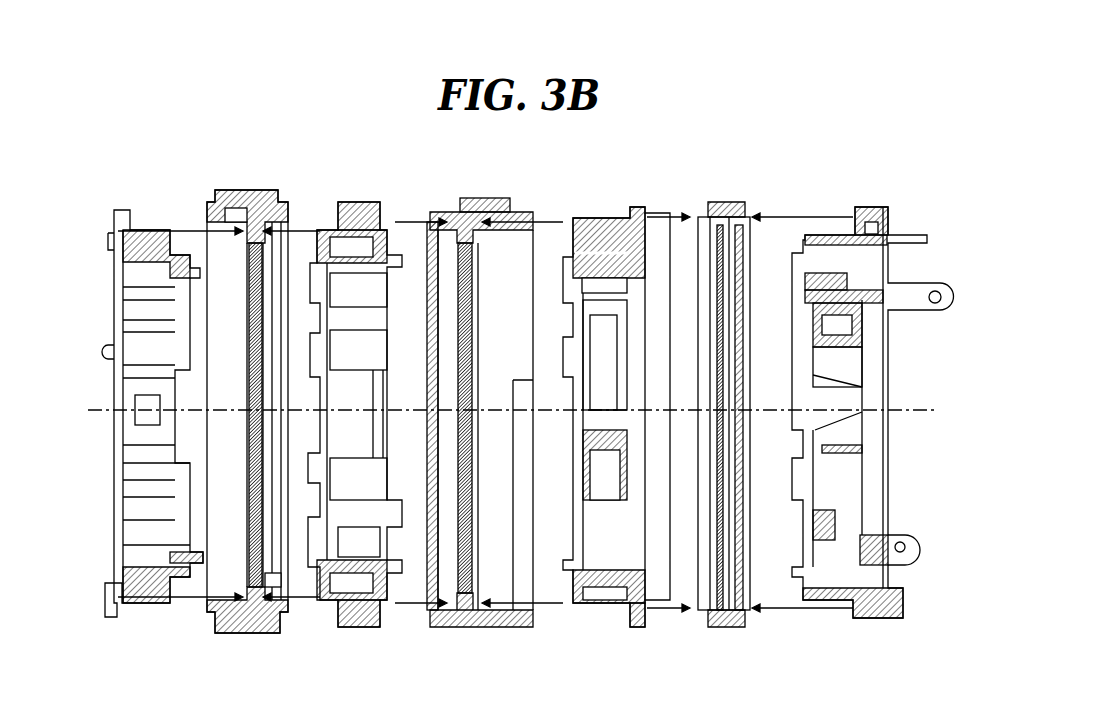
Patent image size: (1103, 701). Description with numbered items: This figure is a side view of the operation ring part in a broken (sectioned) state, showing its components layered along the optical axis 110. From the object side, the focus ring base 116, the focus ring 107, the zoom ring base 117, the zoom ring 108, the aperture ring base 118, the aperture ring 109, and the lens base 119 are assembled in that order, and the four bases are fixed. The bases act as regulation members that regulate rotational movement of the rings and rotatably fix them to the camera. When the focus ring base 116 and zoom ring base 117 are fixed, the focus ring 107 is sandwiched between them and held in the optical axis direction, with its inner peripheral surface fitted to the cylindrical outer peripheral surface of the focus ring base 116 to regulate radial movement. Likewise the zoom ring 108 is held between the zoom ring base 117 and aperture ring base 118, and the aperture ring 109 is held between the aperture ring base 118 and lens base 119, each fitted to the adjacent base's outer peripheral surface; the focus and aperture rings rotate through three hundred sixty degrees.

The optical axis 110 is at (100, 424).
The focus ring base 116 is at (150, 222).
The focus ring 107 is at (223, 258).
The zoom ring base 117 is at (363, 212).
The zoom ring 108 is at (447, 263).
The aperture ring base 118 is at (658, 212).
The aperture ring 109 is at (718, 202).
The lens base 119 is at (872, 620).